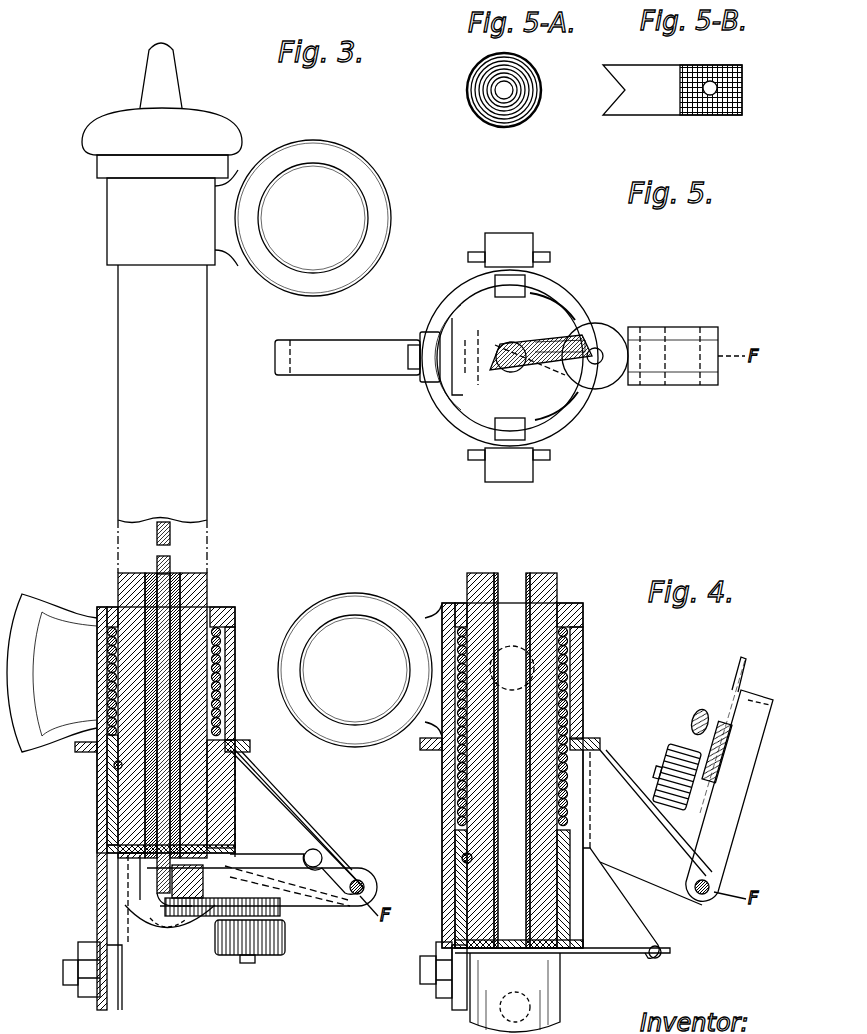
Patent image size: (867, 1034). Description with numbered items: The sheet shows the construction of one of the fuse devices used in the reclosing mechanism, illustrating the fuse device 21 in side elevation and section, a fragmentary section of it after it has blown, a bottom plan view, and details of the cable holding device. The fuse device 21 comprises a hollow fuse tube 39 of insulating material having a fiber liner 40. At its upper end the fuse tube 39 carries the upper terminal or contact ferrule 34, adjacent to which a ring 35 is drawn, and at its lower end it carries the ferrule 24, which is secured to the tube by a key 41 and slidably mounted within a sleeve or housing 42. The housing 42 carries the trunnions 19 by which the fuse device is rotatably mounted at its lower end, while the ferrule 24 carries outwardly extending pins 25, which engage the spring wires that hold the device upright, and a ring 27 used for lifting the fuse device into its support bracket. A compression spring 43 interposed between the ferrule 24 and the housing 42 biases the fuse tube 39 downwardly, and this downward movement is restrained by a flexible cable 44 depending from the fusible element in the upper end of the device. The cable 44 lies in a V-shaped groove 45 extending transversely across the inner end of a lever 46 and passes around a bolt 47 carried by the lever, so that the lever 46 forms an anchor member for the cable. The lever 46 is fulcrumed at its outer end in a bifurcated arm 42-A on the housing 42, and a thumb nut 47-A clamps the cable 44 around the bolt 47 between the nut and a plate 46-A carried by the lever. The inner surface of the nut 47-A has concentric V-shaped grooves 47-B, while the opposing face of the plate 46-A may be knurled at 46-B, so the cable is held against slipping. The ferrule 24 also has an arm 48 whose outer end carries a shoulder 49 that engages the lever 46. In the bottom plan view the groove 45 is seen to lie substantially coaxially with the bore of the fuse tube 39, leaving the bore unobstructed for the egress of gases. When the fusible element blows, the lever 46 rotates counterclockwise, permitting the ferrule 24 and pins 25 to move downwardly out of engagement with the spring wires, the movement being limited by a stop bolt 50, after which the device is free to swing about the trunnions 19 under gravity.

In FIG. 3, the trunnions 19 is at (236, 703).
In FIG. 4, the trunnions 19 is at (584, 610).
In FIG. 5, the trunnions 19 is at (508, 235).
In FIG. 3, the fuse device 21 is at (106, 337).
In FIG. 3, the ferrule 24 is at (222, 770).
In FIG. 4, the ferrule 24 is at (576, 953).
In FIG. 5, the ferrule 24 is at (485, 425).
In FIG. 3, the pins 25 is at (170, 940).
In FIG. 4, the pins 25 is at (498, 1008).
In FIG. 5, the pins 25 is at (516, 278).
In FIG. 3, the ring 27 is at (47, 612).
In FIG. 4, the ring 27 is at (380, 606).
In FIG. 5, the ring 27 is at (350, 372).
In FIG. 3, the upper terminal or contact ferrule 34 is at (113, 125).
In FIG. 3, the ring 35 is at (360, 188).
In FIG. 3, the hollow fuse tube 39 is at (210, 581).
In FIG. 4, the hollow fuse tube 39 is at (545, 575).
In FIG. 3, the fiber liner 40 is at (140, 803).
In FIG. 4, the fiber liner 40 is at (503, 585).
In FIG. 5, the fiber liner 40 is at (528, 357).
In FIG. 3, the key 41 is at (114, 766).
In FIG. 4, the key 41 is at (462, 857).
In FIG. 3, the sleeve or housing 42 is at (236, 672).
In FIG. 4, the sleeve or housing 42 is at (584, 678).
In FIG. 5, the sleeve or housing 42 is at (452, 403).
In FIG. 3, the bifurcated arm 42-A is at (287, 798).
In FIG. 4, the bifurcated arm 42-A is at (612, 772).
In FIG. 5, the bifurcated arm 42-A is at (700, 330).
In FIG. 3, the compression spring 43 is at (222, 636).
In FIG. 4, the compression spring 43 is at (567, 652).
In FIG. 3, the flexible cable 44 is at (172, 563).
In FIG. 4, the flexible cable 44 is at (722, 750).
In FIG. 5, the flexible cable 44 is at (552, 385).
In FIG. 3, the V-shaped groove 45 is at (140, 884).
In FIG. 4, the V-shaped groove 45 is at (758, 700).
In FIG. 5, the V-shaped groove 45 is at (478, 345).
In FIG. 3, the lever 46 is at (298, 906).
In FIG. 4, the lever 46 is at (730, 818).
In FIG. 3, the plate 46-A is at (232, 920).
In FIG. 4, the plate 46-A is at (740, 686).
In FIG. 5, the plate 46-A is at (505, 325).
In FIG. 5-B, the plate 46-A is at (643, 115).
In FIG. 5-B, the knurled surface 46-B is at (725, 116).
In FIG. 3, the bolt 47 is at (250, 964).
In FIG. 4, the bolt 47 is at (655, 776).
In FIG. 5, the bolt 47 is at (605, 365).
In FIG. 3, the thumb nut 47-A is at (287, 942).
In FIG. 4, the thumb nut 47-A is at (684, 742).
In FIG. 5, the thumb nut 47-A is at (600, 325).
In FIG. 5-A, the thumb nut 47-A is at (490, 122).
In FIG. 5-A, the concentric V-shaped grooves 47-B is at (525, 118).
In FIG. 3, the arm 48 is at (282, 823).
In FIG. 4, the arm 48 is at (640, 921).
In FIG. 5, the arm 48 is at (650, 340).
In FIG. 3, the shoulder 49 is at (322, 858).
In FIG. 4, the shoulder 49 is at (668, 962).
In FIG. 5, the shoulder 49 is at (670, 335).
In FIG. 3, the stop bolt 50 is at (120, 981).
In FIG. 4, the stop bolt 50 is at (468, 976).
In FIG. 5, the stop bolt 50 is at (440, 382).